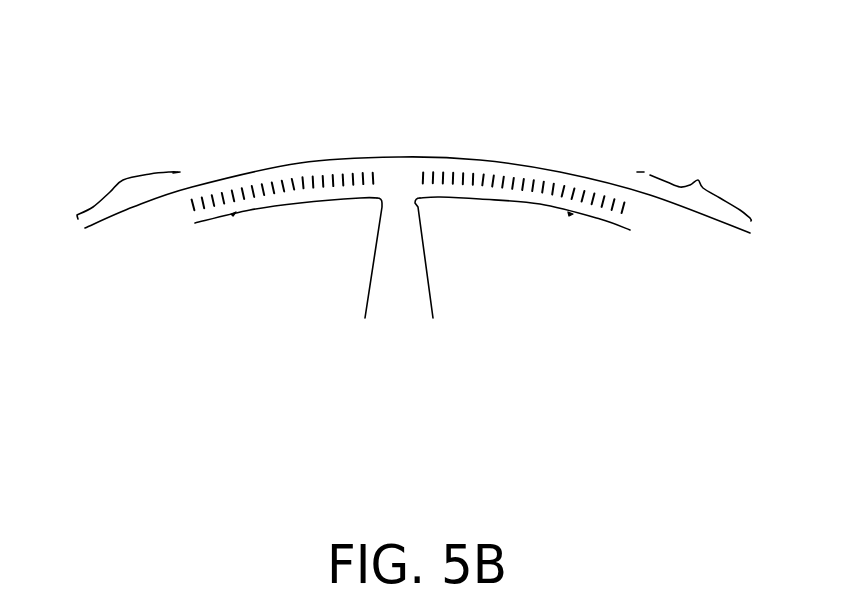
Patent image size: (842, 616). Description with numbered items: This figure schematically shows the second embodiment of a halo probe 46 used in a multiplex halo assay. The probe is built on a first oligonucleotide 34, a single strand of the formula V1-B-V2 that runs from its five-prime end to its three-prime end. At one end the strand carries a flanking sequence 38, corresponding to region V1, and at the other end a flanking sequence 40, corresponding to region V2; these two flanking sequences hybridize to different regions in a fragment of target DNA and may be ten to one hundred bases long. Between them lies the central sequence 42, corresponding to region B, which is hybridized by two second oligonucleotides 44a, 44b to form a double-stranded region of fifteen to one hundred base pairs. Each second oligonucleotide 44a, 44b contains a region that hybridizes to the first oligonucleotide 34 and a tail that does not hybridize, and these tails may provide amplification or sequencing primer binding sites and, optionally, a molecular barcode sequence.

The halo probe 46 is at (199, 48).
The first oligonucleotide 34 is at (130, 208).
The flanking sequence 38 is at (130, 181).
The flanking sequence 40 is at (698, 180).
The central sequence 42 is at (188, 173).
The second oligonucleotide 44a is at (372, 268).
The second oligonucleotide 44b is at (429, 290).